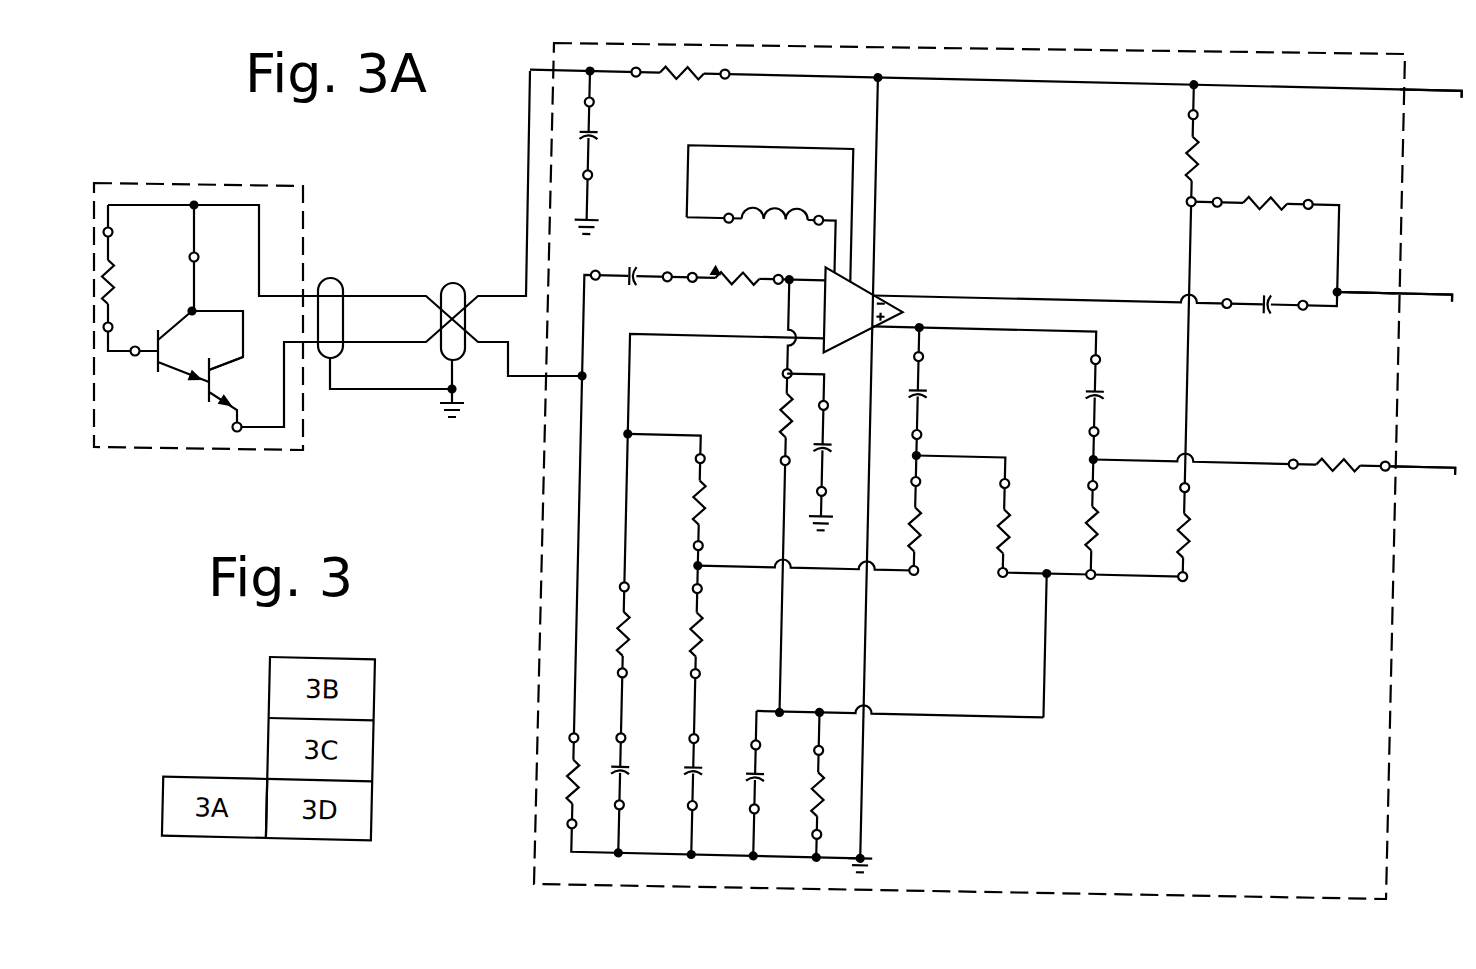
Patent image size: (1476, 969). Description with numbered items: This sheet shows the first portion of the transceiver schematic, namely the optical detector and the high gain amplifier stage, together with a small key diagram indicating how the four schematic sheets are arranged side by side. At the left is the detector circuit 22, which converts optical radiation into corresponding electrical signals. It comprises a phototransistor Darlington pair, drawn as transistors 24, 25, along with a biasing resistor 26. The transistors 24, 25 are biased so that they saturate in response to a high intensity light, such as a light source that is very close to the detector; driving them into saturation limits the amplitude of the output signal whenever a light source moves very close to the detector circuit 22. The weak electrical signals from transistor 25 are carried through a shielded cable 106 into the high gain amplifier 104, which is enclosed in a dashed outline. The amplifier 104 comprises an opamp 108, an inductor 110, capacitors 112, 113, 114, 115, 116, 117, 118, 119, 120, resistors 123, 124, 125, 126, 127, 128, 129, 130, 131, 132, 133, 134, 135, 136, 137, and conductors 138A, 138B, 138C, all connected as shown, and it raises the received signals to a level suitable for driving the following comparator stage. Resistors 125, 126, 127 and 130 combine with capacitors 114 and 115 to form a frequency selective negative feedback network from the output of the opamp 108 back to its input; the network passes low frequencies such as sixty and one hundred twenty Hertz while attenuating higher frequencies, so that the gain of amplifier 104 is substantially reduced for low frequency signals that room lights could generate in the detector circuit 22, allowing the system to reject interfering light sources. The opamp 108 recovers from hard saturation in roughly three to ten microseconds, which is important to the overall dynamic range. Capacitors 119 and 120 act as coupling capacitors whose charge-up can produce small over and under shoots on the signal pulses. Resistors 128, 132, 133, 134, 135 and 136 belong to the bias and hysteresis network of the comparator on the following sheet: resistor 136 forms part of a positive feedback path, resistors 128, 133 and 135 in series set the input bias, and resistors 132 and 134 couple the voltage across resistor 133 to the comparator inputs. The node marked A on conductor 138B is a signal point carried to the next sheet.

The detector circuit 22 is at (305, 195).
The transistor 24 is at (148, 333).
The transistor 25 is at (205, 400).
The biasing resistor 26 is at (115, 278).
The high gain amplifier 104 is at (553, 50).
The shielded cable 106 is at (373, 288).
The opamp 108 is at (884, 282).
The inductor 110 is at (771, 203).
The capacitor 112 is at (597, 134).
The capacitor 113 is at (639, 262).
The capacitor 114 is at (639, 767).
The capacitor 115 is at (712, 766).
The capacitor 116 is at (773, 767).
The capacitor 117 is at (832, 436).
The capacitor 118 is at (928, 386).
The coupling capacitor 119 is at (1105, 382).
The coupling capacitor 120 is at (1268, 298).
The resistor 123 is at (690, 78).
The resistor 124 is at (745, 284).
The resistor 125 is at (707, 495).
The resistor 126 is at (641, 617).
The resistor 127 is at (716, 632).
The resistor 128 is at (831, 786).
The resistor 129 is at (790, 422).
The resistor 130 is at (928, 508).
The resistor 131 is at (1018, 506).
The resistor 132 is at (1106, 504).
The resistor 133 is at (1192, 508).
The resistor 134 is at (1271, 181).
The resistor 135 is at (1192, 137).
The resistor 136 is at (1332, 460).
The resistor 137 is at (592, 764).
The conductor 138A is at (1442, 68).
The conductor 138B is at (1444, 274).
The conductor 138C is at (1440, 448).
The node A is at (1378, 272).